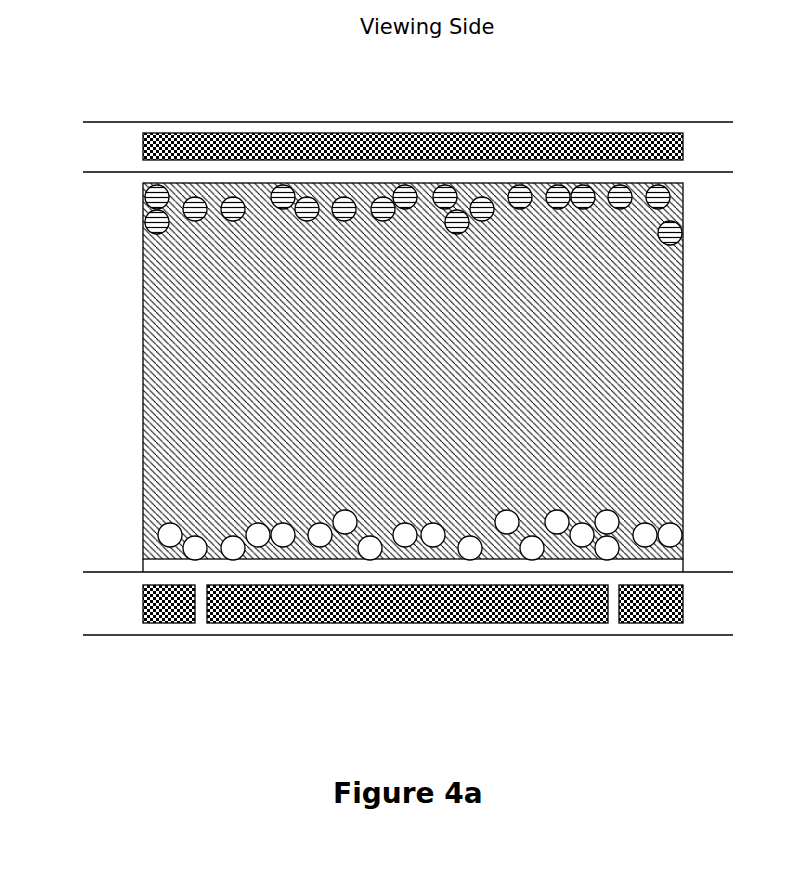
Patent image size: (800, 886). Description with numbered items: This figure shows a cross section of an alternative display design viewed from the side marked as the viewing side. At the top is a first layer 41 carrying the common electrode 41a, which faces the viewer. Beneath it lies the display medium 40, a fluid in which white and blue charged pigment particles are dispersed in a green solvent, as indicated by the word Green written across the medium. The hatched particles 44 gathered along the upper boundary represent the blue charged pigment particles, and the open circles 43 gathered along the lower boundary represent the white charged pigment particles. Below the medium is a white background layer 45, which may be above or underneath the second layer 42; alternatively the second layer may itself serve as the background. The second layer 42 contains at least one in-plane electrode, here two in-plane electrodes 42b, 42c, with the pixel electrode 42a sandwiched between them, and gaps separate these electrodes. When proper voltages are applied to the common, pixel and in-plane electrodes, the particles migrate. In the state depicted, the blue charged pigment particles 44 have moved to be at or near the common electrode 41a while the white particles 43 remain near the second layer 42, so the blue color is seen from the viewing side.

The green display medium / electrophoretic layer 40 is at (691, 369).
The top substrate (viewing side) 41 is at (132, 139).
The common electrode 41a is at (195, 137).
The second layer 42 is at (707, 606).
The pixel electrode 42a is at (420, 608).
The in-plane electrode 42b is at (170, 608).
The in-plane electrode 42c is at (657, 606).
The white particles 43 is at (680, 531).
The colored (hatched) particles 44 is at (583, 187).
The white background layer 45 is at (308, 580).